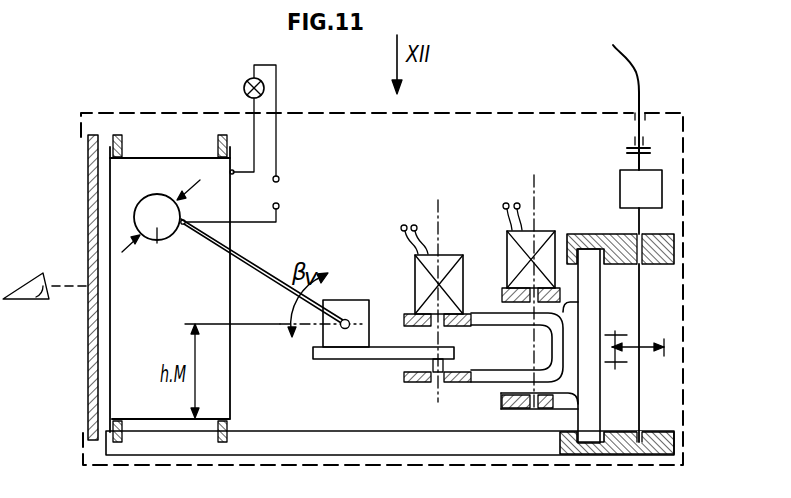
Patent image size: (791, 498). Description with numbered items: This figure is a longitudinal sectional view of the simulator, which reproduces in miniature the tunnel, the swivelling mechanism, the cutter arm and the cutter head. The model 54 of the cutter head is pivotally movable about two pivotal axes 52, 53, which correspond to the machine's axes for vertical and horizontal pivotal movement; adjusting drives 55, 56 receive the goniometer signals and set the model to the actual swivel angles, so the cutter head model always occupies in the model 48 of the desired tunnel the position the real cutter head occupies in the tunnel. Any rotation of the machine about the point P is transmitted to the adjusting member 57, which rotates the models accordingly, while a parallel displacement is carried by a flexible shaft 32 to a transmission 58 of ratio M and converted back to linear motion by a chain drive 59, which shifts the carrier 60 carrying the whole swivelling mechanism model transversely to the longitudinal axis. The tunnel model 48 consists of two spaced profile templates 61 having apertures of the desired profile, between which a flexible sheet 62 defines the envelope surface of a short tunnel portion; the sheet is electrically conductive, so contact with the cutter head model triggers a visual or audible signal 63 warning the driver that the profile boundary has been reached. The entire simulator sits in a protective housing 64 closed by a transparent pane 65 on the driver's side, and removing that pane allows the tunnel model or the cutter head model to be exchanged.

The flexible shaft 32 is at (623, 62).
The model of the desired tunnel 48 is at (128, 365).
The pivotal axis 52 is at (347, 318).
The pivotal axis 53 is at (435, 213).
The model of the cutter head 54 is at (161, 221).
The adjusting drive 55 is at (363, 309).
The adjusting drive 56 is at (416, 265).
The adjusting member 57 is at (507, 240).
The transmission 58 is at (620, 187).
The chain drive 59 is at (668, 347).
The carrier 60 is at (592, 392).
The profile templates 61 is at (218, 148).
The flexible sheet 62 is at (143, 416).
The visual or audible signal 63 is at (244, 88).
The protective housing 64 is at (729, 146).
The transparent pane 65 is at (89, 198).